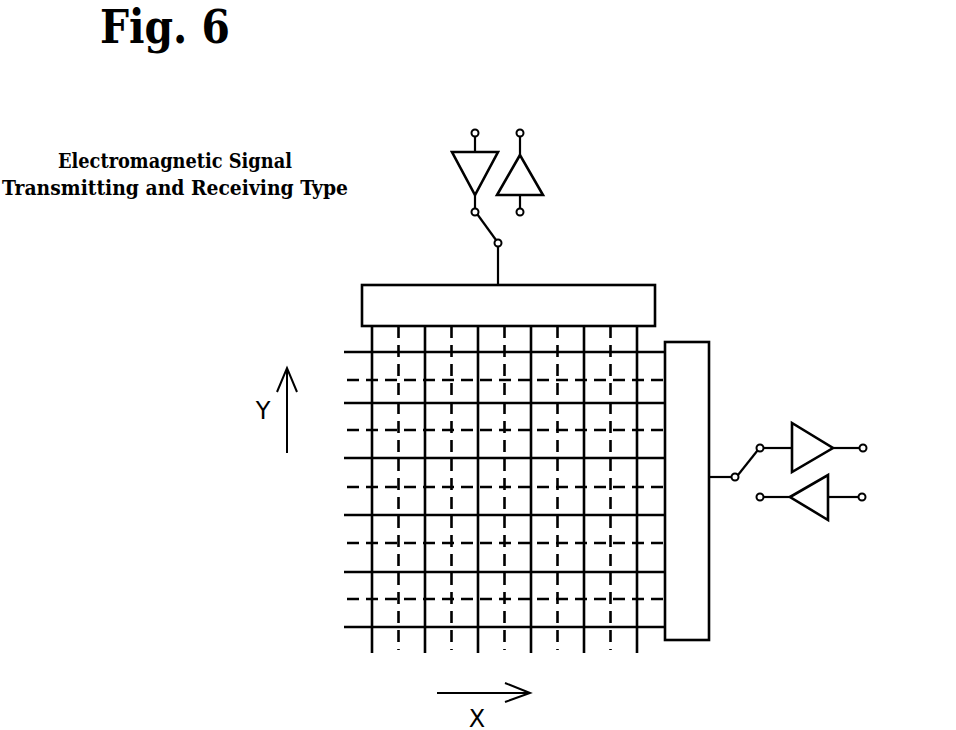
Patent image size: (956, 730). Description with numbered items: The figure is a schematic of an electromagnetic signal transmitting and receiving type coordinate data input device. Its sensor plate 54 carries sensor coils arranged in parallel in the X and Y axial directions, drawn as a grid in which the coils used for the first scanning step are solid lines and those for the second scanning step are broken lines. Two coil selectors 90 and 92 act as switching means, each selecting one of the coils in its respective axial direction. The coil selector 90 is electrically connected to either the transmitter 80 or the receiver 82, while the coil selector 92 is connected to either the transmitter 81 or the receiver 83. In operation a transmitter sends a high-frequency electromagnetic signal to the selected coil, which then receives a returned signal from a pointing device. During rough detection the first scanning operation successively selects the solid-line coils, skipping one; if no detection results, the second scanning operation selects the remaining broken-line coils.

The sensor plate 54 is at (343, 495).
The transmitter 80 is at (460, 172).
The transmitter 81 is at (822, 518).
The receiver 82 is at (540, 172).
The receiver 83 is at (812, 428).
The coil selector 90 is at (655, 303).
The coil selector 92 is at (687, 643).